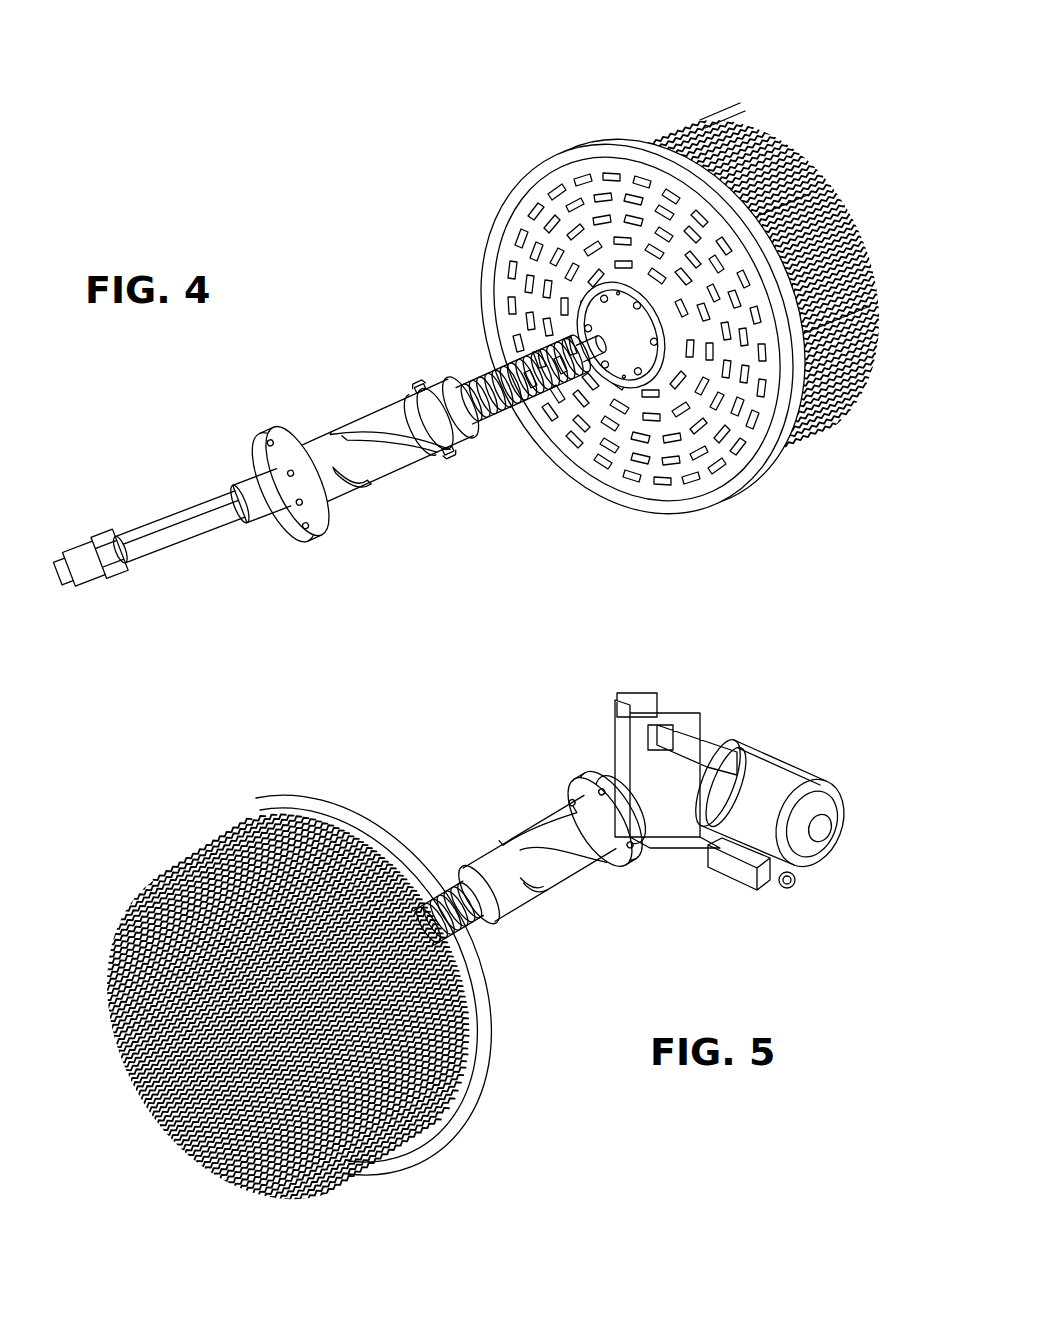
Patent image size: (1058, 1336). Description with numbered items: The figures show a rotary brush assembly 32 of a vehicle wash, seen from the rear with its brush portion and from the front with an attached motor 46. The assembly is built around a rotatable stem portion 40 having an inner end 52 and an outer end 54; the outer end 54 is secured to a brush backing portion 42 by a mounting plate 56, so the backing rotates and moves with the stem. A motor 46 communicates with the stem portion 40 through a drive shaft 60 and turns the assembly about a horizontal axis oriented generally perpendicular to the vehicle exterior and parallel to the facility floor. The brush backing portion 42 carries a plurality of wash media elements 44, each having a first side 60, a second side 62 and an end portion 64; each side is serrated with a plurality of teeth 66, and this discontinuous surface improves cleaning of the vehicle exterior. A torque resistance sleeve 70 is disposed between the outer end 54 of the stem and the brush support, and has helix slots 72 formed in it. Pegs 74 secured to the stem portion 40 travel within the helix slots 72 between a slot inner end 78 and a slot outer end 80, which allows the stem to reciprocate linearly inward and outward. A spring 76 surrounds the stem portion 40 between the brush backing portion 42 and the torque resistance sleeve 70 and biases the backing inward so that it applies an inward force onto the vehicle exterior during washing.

In FIG. 4, the rotary brush assembly 32 is at (548, 138).
In FIG. 5, the rotary brush assembly 32 is at (628, 884).
In FIG. 4, the stem portion 40 is at (548, 422).
In FIG. 5, the stem portion 40 is at (452, 883).
In FIG. 4, the brush backing portion 42 is at (740, 480).
In FIG. 5, the brush backing portion 42 is at (338, 800).
In FIG. 4, the wash media elements 44 is at (868, 257).
In FIG. 5, the wash media elements 44 is at (195, 833).
In FIG. 5, the motor 46 is at (762, 772).
In FIG. 4, the inner end 52 is at (584, 323).
In FIG. 4, the outer end 54 is at (497, 418).
In FIG. 4, the mounting plate 56 is at (633, 385).
In FIG. 4, the drive shaft / first side 60 is at (197, 515).
In FIG. 4, the second side 62 is at (878, 306).
In FIG. 4, the end portion 64 is at (815, 197).
In FIG. 4, the teeth 66 is at (792, 150).
In FIG. 4, the torque resistance sleeve 70 is at (395, 460).
In FIG. 5, the torque resistance sleeve 70 is at (545, 836).
In FIG. 4, the helix slots 72 is at (345, 468).
In FIG. 4, the pegs 74 is at (446, 448).
In FIG. 4, the spring 76 is at (520, 362).
In FIG. 5, the spring 76 is at (480, 918).
In FIG. 4, the slot inner end 78 is at (430, 445).
In FIG. 4, the slot outer end 80 is at (338, 470).